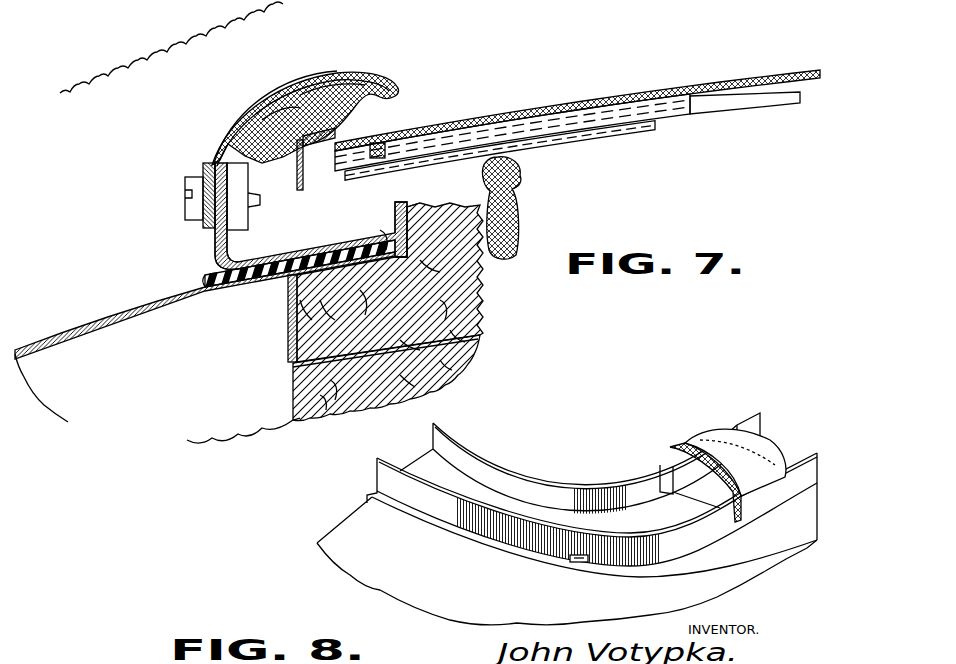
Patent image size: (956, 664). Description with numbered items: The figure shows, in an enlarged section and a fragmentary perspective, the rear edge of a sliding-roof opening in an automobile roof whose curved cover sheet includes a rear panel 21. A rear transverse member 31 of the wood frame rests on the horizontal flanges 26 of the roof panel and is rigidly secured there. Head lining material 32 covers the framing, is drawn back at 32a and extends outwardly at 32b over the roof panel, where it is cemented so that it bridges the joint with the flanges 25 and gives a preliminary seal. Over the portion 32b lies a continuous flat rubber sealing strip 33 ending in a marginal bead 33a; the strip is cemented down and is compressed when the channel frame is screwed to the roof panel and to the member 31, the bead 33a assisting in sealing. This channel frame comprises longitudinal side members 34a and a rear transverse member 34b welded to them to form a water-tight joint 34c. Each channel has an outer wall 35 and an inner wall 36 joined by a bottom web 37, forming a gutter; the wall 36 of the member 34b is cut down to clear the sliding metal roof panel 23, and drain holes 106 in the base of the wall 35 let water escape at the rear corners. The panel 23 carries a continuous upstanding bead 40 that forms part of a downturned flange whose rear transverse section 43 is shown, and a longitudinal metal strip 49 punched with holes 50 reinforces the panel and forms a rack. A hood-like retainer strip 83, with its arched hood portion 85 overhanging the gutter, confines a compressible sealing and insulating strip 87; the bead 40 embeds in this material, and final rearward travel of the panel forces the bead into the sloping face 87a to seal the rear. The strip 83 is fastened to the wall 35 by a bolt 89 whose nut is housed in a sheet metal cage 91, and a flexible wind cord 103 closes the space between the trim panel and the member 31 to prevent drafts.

In FIG. 7, the rear panel 21 is at (117, 312).
In FIG. 7, the sliding metal roof panel 23 is at (718, 82).
In FIG. 7, the flanges 25 is at (237, 381).
In FIG. 7, the horizontal flanges 26 is at (303, 420).
In FIG. 7, the rear transverse member 31 is at (483, 288).
In FIG. 7, the head lining material 32 is at (473, 366).
In FIG. 7, the drawn-back portion of head lining material 32a is at (422, 203).
In FIG. 7, the outwardly extending portion of head lining material 32b is at (233, 289).
In FIG. 7, the rubber sealing strip 33 is at (259, 289).
In FIG. 7, the marginal bead 33a is at (208, 268).
In FIG. 7, the outer vertical side flange 35 is at (229, 244).
In FIG. 8, the outer vertical side flange 35 is at (490, 540).
In FIG. 7, the inner vertical side flange 36 is at (397, 210).
In FIG. 8, the inner vertical side flange 36 is at (545, 490).
In FIG. 7, the bottom web 37 is at (303, 250).
In FIG. 7, the upstanding bead 40 is at (312, 147).
In FIG. 7, the rear transverse flange section 43 is at (253, 193).
In FIG. 7, the longitudinal metal strip 49 is at (600, 138).
In FIG. 7, the holes 50 is at (573, 145).
In FIG. 7, the retainer strip 83 is at (243, 108).
In FIG. 8, the retainer strip 83 is at (706, 436).
In FIG. 7, the arched hood portion 85 is at (348, 74).
In FIG. 7, the compressible sealing and insulating strip 87 is at (306, 92).
In FIG. 7, the sloping face 87a is at (285, 118).
In FIG. 7, the bolt 89 is at (185, 178).
In FIG. 7, the sheet metal cage 91 is at (232, 163).
In FIG. 7, the flexible wind cord 103 is at (520, 185).
In FIG. 8, the drain holes 106 is at (580, 562).
In FIG. 8, the longitudinal side members 34a is at (758, 414).
In FIG. 8, the rear transverse member 34b is at (497, 478).
In FIG. 8, the water-tight joint 34c is at (663, 466).